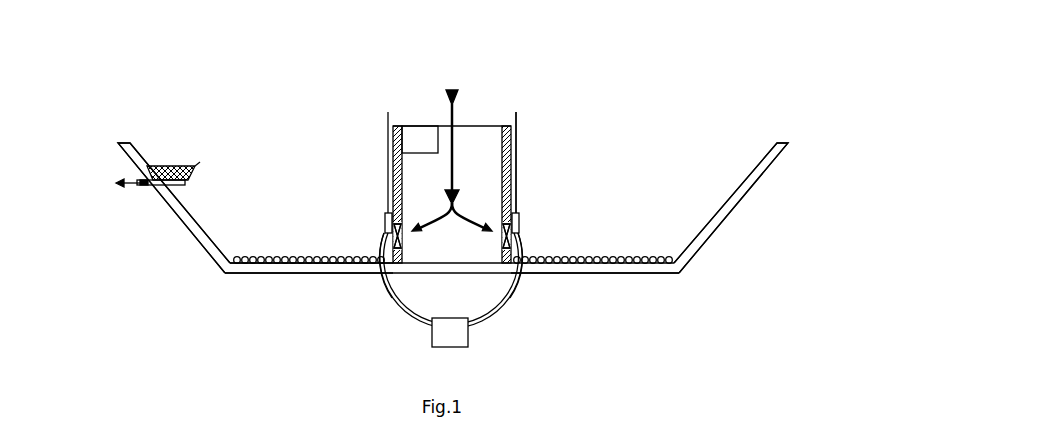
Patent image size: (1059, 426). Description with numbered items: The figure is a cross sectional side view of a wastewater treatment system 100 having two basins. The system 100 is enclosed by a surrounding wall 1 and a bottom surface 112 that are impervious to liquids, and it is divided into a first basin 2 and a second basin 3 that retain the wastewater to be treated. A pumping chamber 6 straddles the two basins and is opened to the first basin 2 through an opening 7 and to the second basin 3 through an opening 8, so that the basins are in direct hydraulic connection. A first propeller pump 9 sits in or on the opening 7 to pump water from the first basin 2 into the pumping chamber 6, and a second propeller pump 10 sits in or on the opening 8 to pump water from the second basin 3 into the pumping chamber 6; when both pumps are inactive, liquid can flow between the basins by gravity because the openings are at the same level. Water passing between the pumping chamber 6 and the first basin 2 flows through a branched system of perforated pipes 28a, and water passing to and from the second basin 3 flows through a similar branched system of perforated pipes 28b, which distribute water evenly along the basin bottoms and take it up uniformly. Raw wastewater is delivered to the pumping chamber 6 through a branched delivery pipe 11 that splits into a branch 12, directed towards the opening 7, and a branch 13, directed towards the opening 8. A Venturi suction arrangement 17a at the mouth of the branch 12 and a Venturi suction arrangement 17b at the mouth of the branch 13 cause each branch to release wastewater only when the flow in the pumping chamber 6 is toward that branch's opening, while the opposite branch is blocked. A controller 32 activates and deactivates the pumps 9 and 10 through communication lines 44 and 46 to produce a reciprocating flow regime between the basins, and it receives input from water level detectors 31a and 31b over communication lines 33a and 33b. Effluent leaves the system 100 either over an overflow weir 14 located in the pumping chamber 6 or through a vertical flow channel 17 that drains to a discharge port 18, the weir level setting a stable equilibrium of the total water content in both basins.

The system 100 is at (770, 85).
The surrounding wall 1 is at (215, 253).
The first basin 2 is at (650, 195).
The second basin 3 is at (272, 196).
The pumping chamber 6 is at (507, 158).
The opening 7 is at (523, 258).
The opening 8 is at (380, 258).
The first propeller pump 9 is at (506, 238).
The second propeller pump 10 is at (400, 245).
The branched delivery pipe 11 is at (459, 92).
The branch 12 is at (517, 128).
The branch 13 is at (414, 226).
The overflow weir 14 is at (425, 138).
The vertical flow channel 17 is at (166, 165).
The Venturi suction arrangement 17a is at (518, 215).
The Venturi suction arrangement 17b is at (384, 230).
The discharge port 18 is at (144, 186).
The branched system of perforated pipes 28a is at (615, 268).
The branched system of perforated pipes 28b is at (236, 264).
The water level detector 31a is at (519, 145).
The water level detector 31b is at (385, 217).
The controller 32 is at (450, 332).
The communication line 33a is at (492, 325).
The communication line 33b is at (410, 325).
The communication line 44 is at (516, 290).
The communication line 46 is at (385, 287).
The bottom surface 112 is at (293, 268).